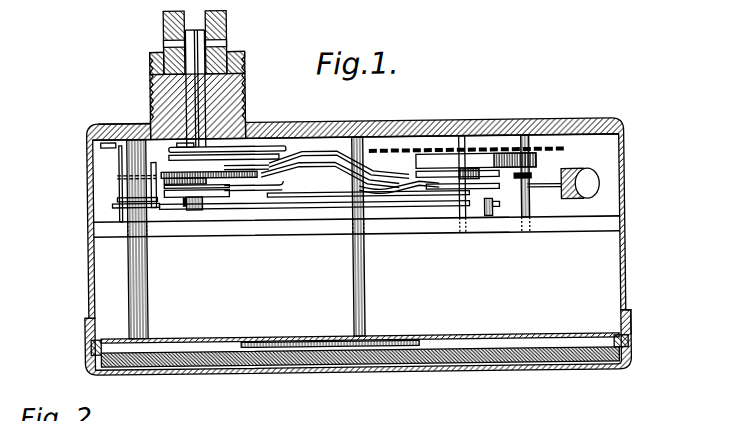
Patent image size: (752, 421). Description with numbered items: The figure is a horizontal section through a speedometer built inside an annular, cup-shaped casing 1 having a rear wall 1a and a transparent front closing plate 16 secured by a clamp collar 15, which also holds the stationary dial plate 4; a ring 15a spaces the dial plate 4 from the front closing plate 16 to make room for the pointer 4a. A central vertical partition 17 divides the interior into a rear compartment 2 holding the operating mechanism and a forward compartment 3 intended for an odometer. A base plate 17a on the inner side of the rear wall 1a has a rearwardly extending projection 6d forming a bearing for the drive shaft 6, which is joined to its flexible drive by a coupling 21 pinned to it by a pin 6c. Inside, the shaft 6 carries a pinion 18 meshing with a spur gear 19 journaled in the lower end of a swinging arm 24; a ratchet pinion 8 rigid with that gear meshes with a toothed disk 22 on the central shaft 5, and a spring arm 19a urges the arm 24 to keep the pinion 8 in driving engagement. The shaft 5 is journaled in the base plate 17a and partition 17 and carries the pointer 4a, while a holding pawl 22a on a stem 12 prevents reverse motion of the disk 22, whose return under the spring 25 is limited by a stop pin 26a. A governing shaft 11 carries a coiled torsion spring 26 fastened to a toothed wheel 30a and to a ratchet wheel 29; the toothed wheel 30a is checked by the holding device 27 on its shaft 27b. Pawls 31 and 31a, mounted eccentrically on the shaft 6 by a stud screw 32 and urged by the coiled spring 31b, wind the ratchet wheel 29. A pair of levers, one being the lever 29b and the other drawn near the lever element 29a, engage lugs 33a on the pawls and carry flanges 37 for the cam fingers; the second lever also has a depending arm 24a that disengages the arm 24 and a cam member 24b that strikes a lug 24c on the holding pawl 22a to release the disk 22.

The casing 1 is at (88, 136).
The rear wall 1a is at (440, 122).
The rear compartment 2 is at (606, 160).
The forward compartment 3 is at (604, 273).
The dial plate 4 is at (482, 336).
The pointer 4a is at (286, 341).
The shaft 5 is at (364, 262).
The shaft 6 is at (186, 32).
The pin 6c is at (229, 43).
The rearwardly extending projection 6d is at (247, 76).
The ratchet pinion 8 is at (195, 208).
The shaft 11 is at (464, 216).
The stem 12 is at (147, 293).
The clamp collar 15 is at (627, 341).
The ring 15a is at (630, 318).
The front closing plate 16 is at (552, 365).
The central vertical partition 17 is at (226, 177).
The base plate 17a is at (118, 144).
The pinion 18 is at (205, 182).
The spur gear 19 is at (150, 177).
The spring arm 19a is at (280, 152).
The coupling 21 is at (230, 20).
The toothed disk 22 is at (410, 236).
The holding pawl 22a is at (115, 207).
The arm 24 is at (167, 140).
The depending arm 24a is at (252, 150).
The cam member 24b is at (148, 137).
The lug 24c is at (120, 199).
The spring 25 is at (318, 208).
The coiled torsion spring 26 is at (543, 163).
The stop pin 26a is at (506, 234).
The holding device 27 is at (552, 189).
The shaft 27b is at (537, 208).
The ratchet wheel 29 is at (533, 181).
The lever 29a is at (315, 160).
The lever 29b is at (336, 156).
The toothed wheel 30a is at (392, 150).
The pawl 31 is at (407, 183).
The pawl 31a is at (290, 197).
The coiled spring 31b is at (256, 199).
The stud screw 32 is at (186, 200).
The lug 33a is at (415, 188).
The flange 37 is at (493, 206).